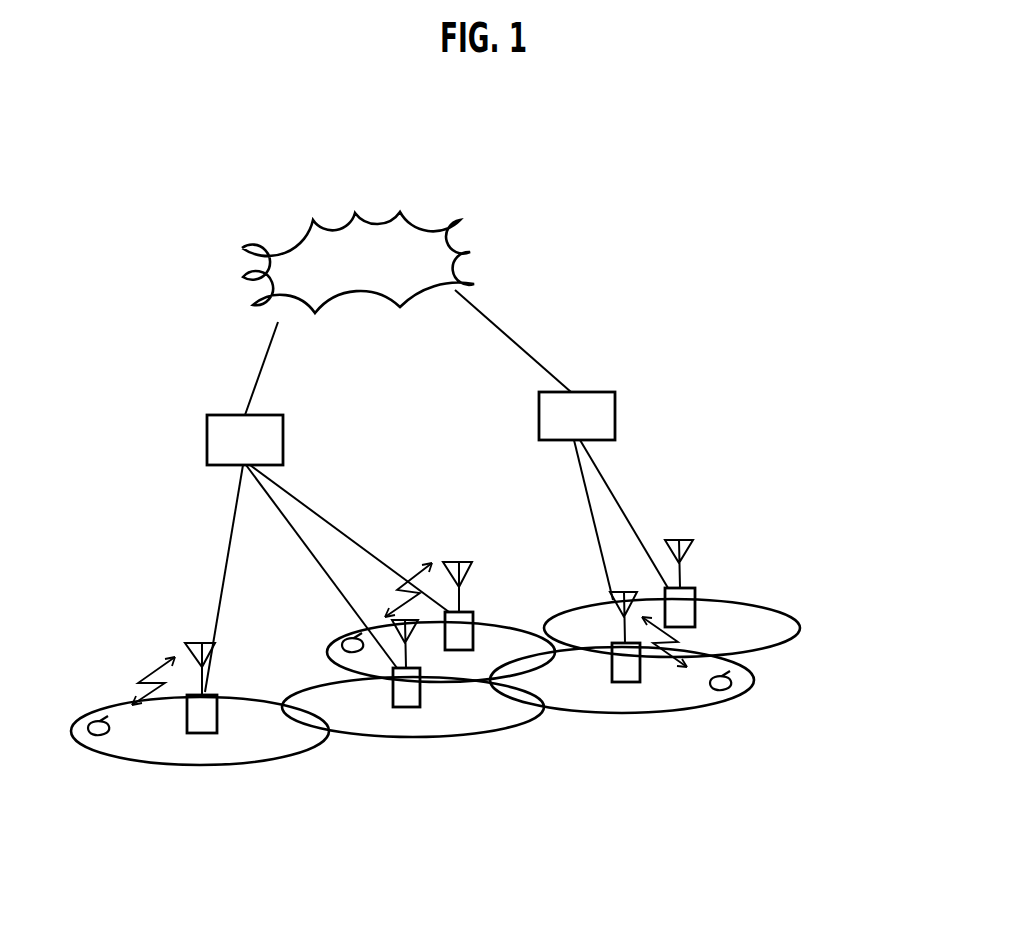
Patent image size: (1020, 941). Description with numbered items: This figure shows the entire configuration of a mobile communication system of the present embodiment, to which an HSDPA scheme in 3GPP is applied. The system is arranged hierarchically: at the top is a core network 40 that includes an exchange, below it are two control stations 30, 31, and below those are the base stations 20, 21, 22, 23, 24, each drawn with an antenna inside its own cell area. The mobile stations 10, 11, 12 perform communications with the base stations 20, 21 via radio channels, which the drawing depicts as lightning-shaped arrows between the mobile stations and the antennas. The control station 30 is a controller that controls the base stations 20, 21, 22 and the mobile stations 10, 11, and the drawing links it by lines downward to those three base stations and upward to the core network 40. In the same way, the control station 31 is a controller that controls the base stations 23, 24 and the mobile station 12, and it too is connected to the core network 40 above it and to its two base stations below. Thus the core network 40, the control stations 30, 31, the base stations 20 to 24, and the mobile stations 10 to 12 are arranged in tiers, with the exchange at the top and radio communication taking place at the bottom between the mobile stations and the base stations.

The mobile station 10 is at (95, 740).
The mobile station 11 is at (350, 655).
The mobile station 12 is at (715, 695).
The base station 20 is at (203, 723).
The base station 21 is at (405, 695).
The base station 22 is at (447, 612).
The base station 23 is at (625, 673).
The base station 24 is at (683, 598).
The control station 30 is at (283, 430).
The control station 31 is at (615, 415).
The core network 40 is at (333, 207).